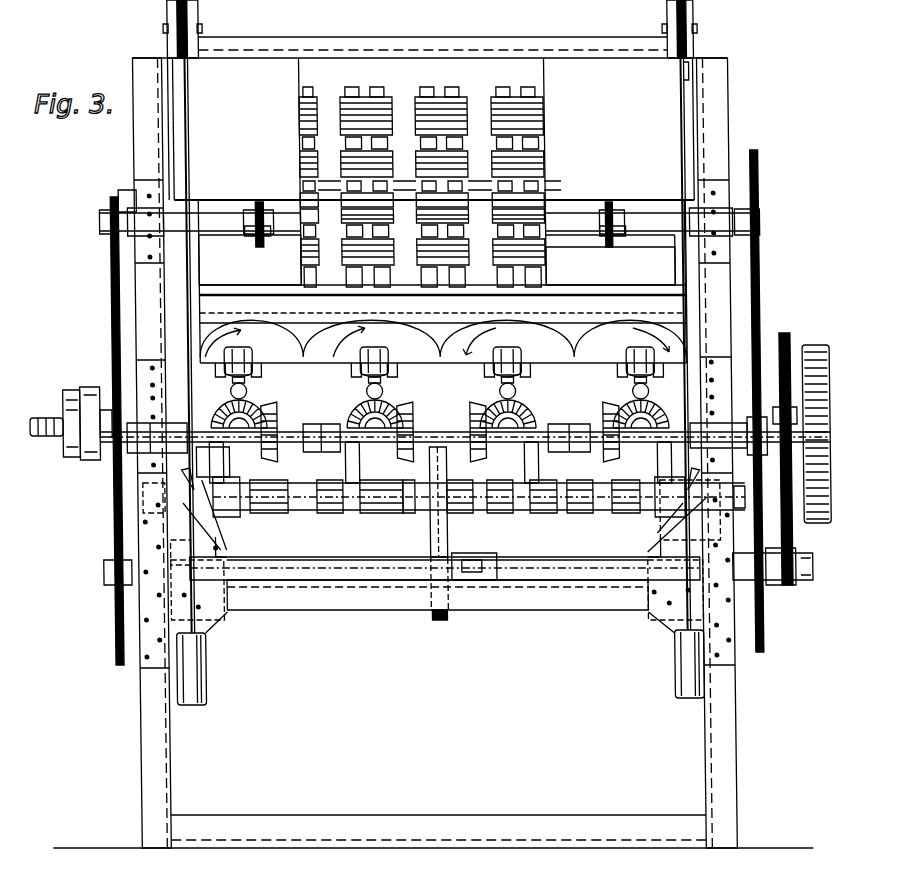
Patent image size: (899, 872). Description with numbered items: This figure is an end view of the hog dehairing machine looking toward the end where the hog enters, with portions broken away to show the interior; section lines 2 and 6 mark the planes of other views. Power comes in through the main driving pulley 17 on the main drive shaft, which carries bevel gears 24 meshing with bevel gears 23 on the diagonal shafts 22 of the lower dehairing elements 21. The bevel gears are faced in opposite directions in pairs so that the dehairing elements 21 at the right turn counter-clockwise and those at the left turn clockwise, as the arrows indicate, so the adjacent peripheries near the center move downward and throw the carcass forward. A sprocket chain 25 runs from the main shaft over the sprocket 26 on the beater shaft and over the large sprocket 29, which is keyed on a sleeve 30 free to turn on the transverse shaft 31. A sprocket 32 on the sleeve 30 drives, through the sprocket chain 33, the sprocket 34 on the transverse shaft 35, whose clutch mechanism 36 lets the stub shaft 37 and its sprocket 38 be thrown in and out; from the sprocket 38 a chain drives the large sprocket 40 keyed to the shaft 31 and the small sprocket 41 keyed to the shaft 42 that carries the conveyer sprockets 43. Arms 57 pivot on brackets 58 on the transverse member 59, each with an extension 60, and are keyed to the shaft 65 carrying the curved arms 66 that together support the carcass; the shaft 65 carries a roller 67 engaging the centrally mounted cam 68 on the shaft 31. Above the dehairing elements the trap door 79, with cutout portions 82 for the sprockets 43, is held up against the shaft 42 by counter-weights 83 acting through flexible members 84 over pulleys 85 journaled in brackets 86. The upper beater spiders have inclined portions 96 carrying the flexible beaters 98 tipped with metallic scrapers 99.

The section line 2- 2 is at (125, 150).
The section line 6- 6 is at (175, 112).
The main driving pulley 17 is at (814, 345).
The dehairing elements 21 is at (439, 353).
The shafts 22 is at (247, 388).
The bevel gear 23 is at (264, 408).
The bevel gear 24 is at (281, 428).
The sprocket chain 25 is at (759, 247).
The sprocket 26 is at (759, 168).
The large sprocket 29 is at (757, 627).
The sleeve 30 is at (782, 582).
The transverse shaft 31 is at (545, 566).
The sprocket 32 is at (785, 556).
The sprocket chain 33 is at (741, 494).
The sprocket 34 is at (774, 347).
The transverse shaft 35 is at (761, 412).
The clutch mechanism 36 is at (86, 462).
The stub shaft 37 is at (103, 470).
The sprocket 38 is at (109, 405).
The large sprocket 40 is at (108, 614).
The small sprocket 41 is at (108, 210).
The shaft 42 is at (641, 225).
The sprockets 43 is at (252, 209).
The arms 57 is at (214, 523).
The brackets 58 is at (223, 562).
The transverse member 59 is at (311, 606).
The extension 60 is at (205, 470).
The shaft 65 is at (394, 512).
The curved arms 66 is at (362, 513).
The roller 67 is at (434, 430).
The cam 68 is at (416, 583).
The trap door 79 is at (238, 245).
The cutout portions 82 is at (262, 242).
The counter-weights 83 is at (199, 683).
The flexible members 84 is at (703, 62).
The pulleys 85 is at (201, 13).
The brackets 86 is at (204, 29).
The rearwardly inclined portions 96 is at (545, 186).
The flexible beaters 98 is at (410, 111).
The metallic scrapers 99 is at (379, 90).